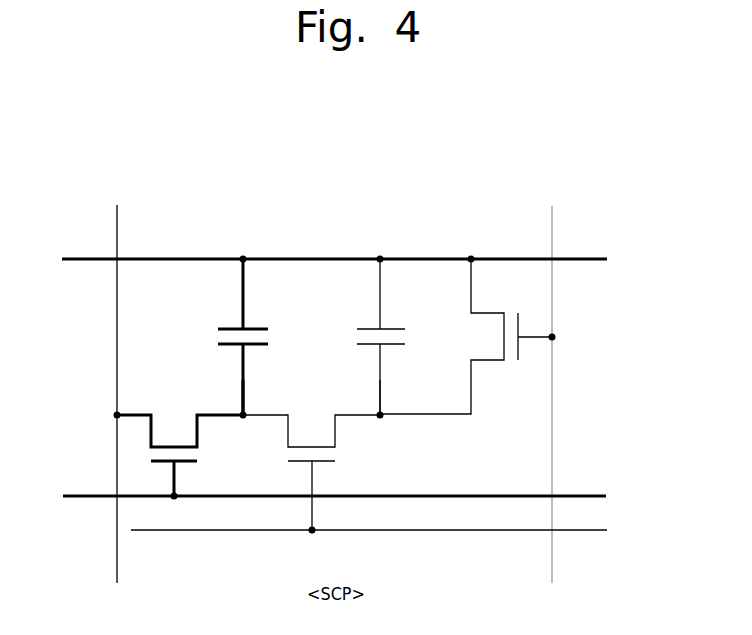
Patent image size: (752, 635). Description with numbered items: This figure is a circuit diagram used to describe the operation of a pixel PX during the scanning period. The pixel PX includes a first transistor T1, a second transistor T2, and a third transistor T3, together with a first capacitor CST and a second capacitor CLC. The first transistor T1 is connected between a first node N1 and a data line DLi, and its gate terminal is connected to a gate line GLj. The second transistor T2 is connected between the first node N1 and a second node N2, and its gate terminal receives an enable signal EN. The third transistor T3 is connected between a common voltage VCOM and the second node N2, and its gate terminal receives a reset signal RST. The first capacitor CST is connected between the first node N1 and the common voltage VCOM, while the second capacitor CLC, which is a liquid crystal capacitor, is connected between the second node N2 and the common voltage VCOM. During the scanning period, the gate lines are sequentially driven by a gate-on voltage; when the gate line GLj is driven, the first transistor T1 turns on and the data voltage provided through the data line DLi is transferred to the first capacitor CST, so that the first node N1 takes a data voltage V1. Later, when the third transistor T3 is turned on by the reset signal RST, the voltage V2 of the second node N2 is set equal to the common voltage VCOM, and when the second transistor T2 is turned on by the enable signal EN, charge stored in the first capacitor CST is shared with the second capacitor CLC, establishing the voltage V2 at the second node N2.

The pixel PX is at (481, 164).
The data line DLi is at (116, 382).
The gate line GLj is at (311, 499).
The reset signal RST is at (551, 381).
The common voltage VCOM is at (362, 262).
The enable signal EN is at (383, 534).
The first capacitor CST is at (222, 336).
The second capacitor CLC is at (360, 336).
The first transistor T1 is at (179, 448).
The second transistor T2 is at (311, 465).
The third transistor T3 is at (468, 335).
The first node N1 is at (243, 418).
The second node N2 is at (380, 418).
The data voltage of the first node V1 is at (256, 391).
The voltage of the second node V2 is at (394, 391).